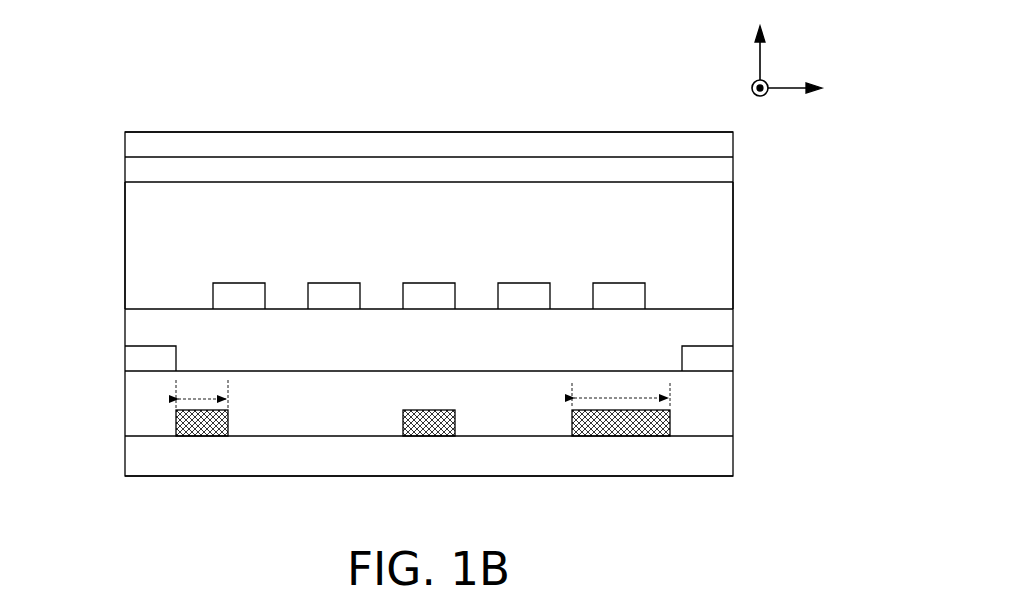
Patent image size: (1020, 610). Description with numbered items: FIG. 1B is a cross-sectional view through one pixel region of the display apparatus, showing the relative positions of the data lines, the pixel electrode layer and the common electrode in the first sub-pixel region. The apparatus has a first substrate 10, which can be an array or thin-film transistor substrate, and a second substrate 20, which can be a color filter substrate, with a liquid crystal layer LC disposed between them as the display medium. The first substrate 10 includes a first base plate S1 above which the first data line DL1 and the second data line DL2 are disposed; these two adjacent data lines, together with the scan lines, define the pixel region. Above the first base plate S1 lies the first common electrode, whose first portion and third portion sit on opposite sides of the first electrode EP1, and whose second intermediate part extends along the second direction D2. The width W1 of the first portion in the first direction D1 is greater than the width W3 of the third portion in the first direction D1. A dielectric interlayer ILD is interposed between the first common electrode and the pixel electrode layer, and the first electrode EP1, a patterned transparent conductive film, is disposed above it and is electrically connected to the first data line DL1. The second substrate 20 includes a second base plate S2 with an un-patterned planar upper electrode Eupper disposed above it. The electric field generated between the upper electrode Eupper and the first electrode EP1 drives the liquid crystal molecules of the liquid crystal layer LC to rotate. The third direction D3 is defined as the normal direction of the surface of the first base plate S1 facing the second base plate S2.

The second base plate S2 is at (133, 144).
The upper electrode Eupper is at (133, 170).
The second substrate 20 is at (748, 133).
The liquid crystal layer LC is at (718, 248).
The first electrode EP1 is at (630, 298).
The dielectric interlayer ILD is at (462, 347).
The second data line DL2 is at (133, 359).
The first data line DL1 is at (718, 357).
The first substrate 10 is at (814, 286).
The first base plate S1 is at (718, 458).
The width of third portion W3 is at (202, 391).
The width of first portion W1 is at (621, 390).
The first direction D1 is at (812, 89).
The second direction D2 is at (759, 102).
The third direction D3 is at (759, 41).